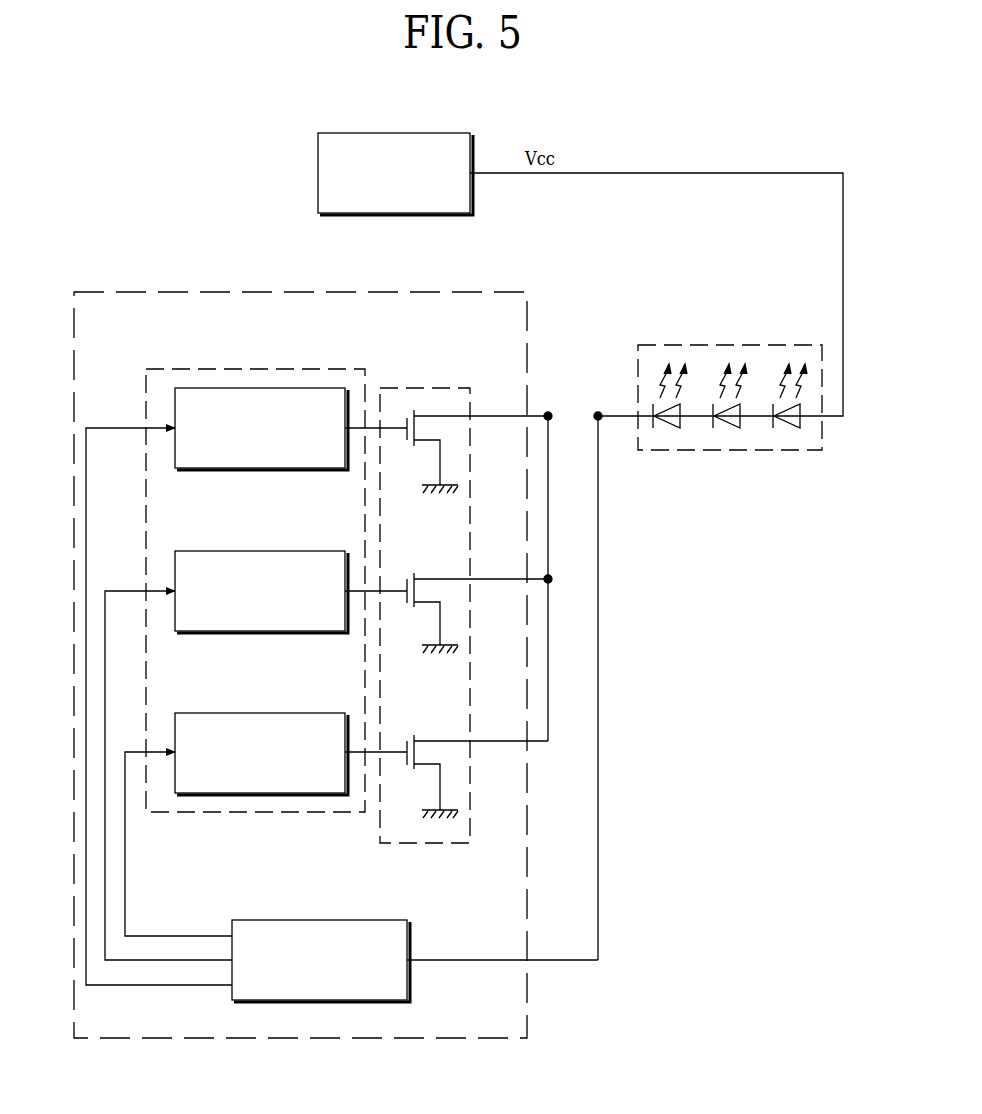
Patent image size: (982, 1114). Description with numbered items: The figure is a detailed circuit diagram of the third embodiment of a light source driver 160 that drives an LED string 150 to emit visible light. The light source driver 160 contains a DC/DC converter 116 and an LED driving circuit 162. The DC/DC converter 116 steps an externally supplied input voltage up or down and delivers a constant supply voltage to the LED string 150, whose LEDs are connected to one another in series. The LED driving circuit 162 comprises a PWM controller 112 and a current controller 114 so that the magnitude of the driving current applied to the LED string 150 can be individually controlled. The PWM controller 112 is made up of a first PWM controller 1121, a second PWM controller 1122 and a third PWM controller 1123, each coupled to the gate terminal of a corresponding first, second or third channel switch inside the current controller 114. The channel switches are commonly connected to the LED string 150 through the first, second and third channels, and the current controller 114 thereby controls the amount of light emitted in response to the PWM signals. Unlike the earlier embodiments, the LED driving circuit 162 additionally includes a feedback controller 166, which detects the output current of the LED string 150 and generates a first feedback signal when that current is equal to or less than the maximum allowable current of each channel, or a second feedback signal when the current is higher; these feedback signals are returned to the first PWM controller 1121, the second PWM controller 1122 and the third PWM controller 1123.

The light source driver 160 is at (225, 225).
The DC/DC converter 116 is at (318, 172).
The LED driving circuit 162 is at (238, 292).
The PWM controller 112 is at (228, 369).
The first PWM controller 1121 is at (272, 388).
The second PWM controller 1122 is at (273, 551).
The third PWM controller 1123 is at (275, 713).
The current controller 114 is at (420, 388).
The LED string 150 is at (742, 345).
The feedback controller 166 is at (318, 920).